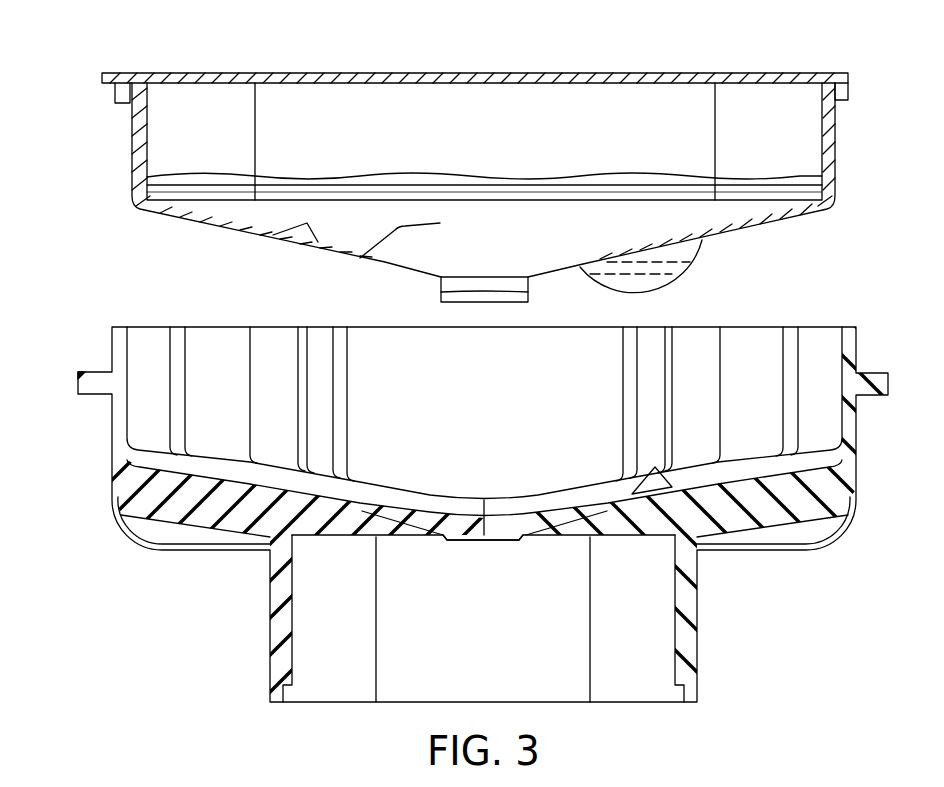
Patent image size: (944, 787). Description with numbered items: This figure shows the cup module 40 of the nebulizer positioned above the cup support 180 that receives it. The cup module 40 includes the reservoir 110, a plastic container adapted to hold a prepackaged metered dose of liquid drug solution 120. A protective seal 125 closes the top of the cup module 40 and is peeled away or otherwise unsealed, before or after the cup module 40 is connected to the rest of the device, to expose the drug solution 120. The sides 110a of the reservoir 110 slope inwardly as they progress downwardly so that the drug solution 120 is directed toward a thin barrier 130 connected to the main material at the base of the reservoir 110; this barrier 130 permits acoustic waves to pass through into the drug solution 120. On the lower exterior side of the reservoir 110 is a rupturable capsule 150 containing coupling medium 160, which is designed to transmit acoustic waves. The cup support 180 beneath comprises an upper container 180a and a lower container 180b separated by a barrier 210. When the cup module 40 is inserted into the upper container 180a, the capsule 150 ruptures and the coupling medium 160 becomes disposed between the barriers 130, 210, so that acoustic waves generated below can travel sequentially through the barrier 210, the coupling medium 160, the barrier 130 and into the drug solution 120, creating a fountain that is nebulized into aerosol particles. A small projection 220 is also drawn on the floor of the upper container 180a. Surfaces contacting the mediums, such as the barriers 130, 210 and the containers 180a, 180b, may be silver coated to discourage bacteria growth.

The cup module 40 is at (104, 101).
The protective seal 125 is at (794, 73).
The reservoir 110 is at (500, 155).
The sides of the reservoir 110a is at (272, 238).
The drug solution 120 is at (360, 258).
The barrier 130 is at (468, 302).
The rupturable capsule 150 is at (706, 257).
The coupling medium 160 is at (668, 270).
The cup support 180 is at (107, 457).
The upper container 180a is at (505, 434).
The lower container 180b is at (505, 638).
The barrier 210 is at (507, 540).
The piercing element 220 is at (675, 470).